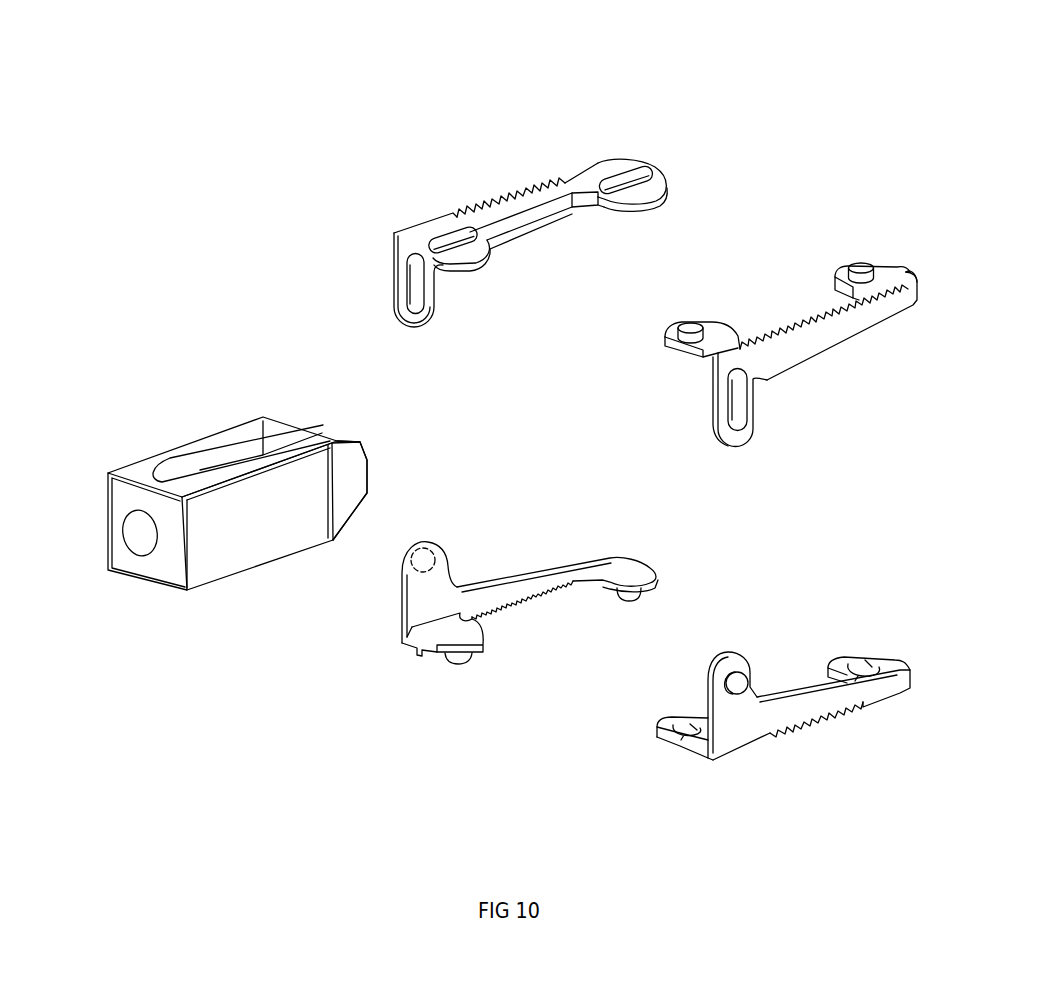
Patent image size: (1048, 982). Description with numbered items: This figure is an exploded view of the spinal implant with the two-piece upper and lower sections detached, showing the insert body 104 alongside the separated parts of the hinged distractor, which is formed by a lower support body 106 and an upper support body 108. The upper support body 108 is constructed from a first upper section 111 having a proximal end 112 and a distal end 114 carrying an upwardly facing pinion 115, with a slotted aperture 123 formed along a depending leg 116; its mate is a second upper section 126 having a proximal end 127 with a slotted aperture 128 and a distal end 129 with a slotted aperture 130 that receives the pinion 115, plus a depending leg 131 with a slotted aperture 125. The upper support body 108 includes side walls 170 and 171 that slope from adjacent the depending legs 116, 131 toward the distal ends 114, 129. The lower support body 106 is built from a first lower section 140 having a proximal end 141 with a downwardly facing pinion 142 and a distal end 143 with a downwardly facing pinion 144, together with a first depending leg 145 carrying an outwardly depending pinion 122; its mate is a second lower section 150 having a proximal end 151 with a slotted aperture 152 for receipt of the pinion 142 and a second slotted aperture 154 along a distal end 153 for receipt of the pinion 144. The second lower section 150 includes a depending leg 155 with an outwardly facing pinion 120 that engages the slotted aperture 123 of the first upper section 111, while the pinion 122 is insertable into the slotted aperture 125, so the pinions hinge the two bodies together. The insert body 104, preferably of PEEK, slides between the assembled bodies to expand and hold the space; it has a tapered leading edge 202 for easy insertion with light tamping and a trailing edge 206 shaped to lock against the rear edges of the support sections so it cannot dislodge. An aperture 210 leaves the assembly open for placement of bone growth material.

The insert body 104 is at (243, 607).
The lower support body 106 is at (915, 563).
The upper support body 108 is at (878, 175).
The first upper section 111 is at (867, 338).
The proximal end 112 is at (682, 360).
The distal end 114 is at (897, 270).
The upwardly facing pinion 115 is at (867, 262).
The depending leg 116 is at (710, 417).
The outwardly facing pinion 120 is at (737, 698).
The outwardly depending pinion 122 is at (442, 547).
The slotted aperture 123 is at (747, 403).
The slotted aperture 125 is at (425, 290).
The second upper section 126 is at (477, 157).
The proximal end 127 is at (398, 245).
The slotted aperture 128 is at (435, 237).
The distal end 129 is at (631, 163).
The slotted aperture 130 is at (641, 183).
The depending leg 131 is at (390, 288).
The first lower section 140 is at (415, 668).
The proximal end 141 is at (398, 645).
The downwardly facing pinion 142 is at (460, 660).
The distal end 143 is at (633, 558).
The downwardly facing pinion 144 is at (643, 595).
The first depending leg 145 is at (397, 598).
The second lower section 150 is at (858, 728).
The proximal end 151 is at (705, 760).
The slotted aperture 152 is at (662, 743).
The distal end 153 is at (908, 663).
The second slotted aperture 154 is at (863, 662).
The depending leg 155 is at (707, 685).
The side wall 170 is at (515, 228).
The side wall 171 is at (813, 358).
The leading edge 202 is at (353, 510).
The trailing edge 206 is at (180, 577).
The aperture 210 is at (192, 463).